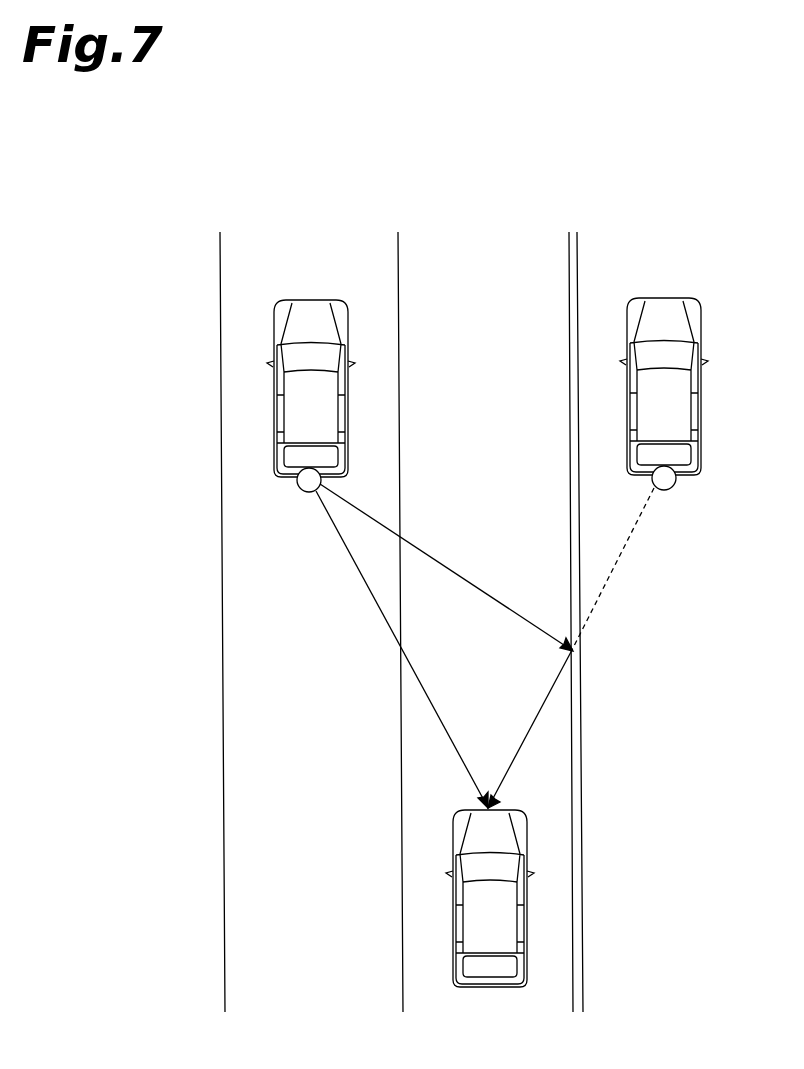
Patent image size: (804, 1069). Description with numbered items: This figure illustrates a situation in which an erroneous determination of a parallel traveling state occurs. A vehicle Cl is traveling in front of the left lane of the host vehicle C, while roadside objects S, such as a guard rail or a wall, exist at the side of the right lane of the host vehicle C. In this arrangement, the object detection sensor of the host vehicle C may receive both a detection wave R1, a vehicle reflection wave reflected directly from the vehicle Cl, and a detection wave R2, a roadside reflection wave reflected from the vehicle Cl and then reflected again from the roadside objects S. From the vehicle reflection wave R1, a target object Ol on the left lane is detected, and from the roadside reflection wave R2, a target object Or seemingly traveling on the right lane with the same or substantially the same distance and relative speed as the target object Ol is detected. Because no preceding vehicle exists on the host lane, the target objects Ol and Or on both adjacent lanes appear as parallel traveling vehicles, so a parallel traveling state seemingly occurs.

The vehicle on the left lane Cl is at (300, 297).
The roadside objects S is at (578, 250).
The target object on the left lane Ol is at (300, 491).
The target object on the right lane Or is at (668, 490).
The detection wave (vehicle reflection wave) R1 is at (447, 728).
The detection wave (roadside reflection wave) R2 is at (530, 738).
The host vehicle C is at (475, 990).